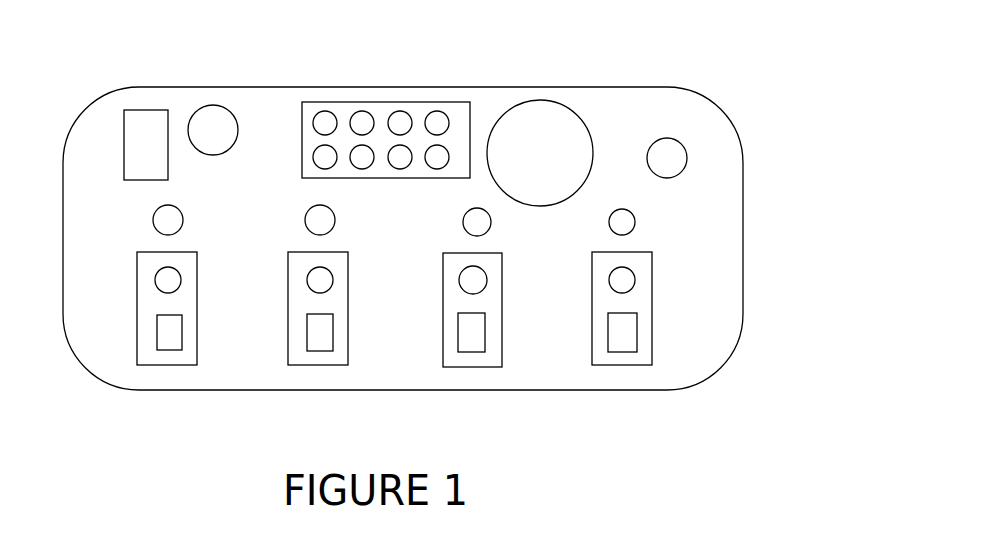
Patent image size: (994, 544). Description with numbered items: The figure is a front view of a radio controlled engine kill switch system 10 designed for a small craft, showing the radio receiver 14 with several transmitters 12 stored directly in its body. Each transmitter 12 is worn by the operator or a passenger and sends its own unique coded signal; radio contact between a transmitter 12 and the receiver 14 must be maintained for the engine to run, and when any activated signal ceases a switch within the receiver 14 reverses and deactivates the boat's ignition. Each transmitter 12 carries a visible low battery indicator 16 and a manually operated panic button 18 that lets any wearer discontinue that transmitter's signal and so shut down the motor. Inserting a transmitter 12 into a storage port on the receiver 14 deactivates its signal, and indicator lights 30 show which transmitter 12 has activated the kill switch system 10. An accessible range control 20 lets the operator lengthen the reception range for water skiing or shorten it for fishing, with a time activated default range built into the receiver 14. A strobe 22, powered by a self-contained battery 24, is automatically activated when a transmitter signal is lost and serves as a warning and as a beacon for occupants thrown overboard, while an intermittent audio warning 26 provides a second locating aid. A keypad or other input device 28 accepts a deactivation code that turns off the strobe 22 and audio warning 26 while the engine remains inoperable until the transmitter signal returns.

The radio controlled engine kill switch system 10 is at (800, 257).
The radio transmitter 12 is at (143, 308).
The radio receiver 14 is at (123, 357).
The low battery indicator 16 is at (167, 278).
The panic button 18 is at (168, 335).
The range control 20 is at (668, 156).
The strobe 22 is at (212, 118).
The self-contained battery 24 is at (148, 130).
The audio warning 26 is at (520, 132).
The input device 28 is at (458, 112).
The indicator lights 30 is at (167, 223).